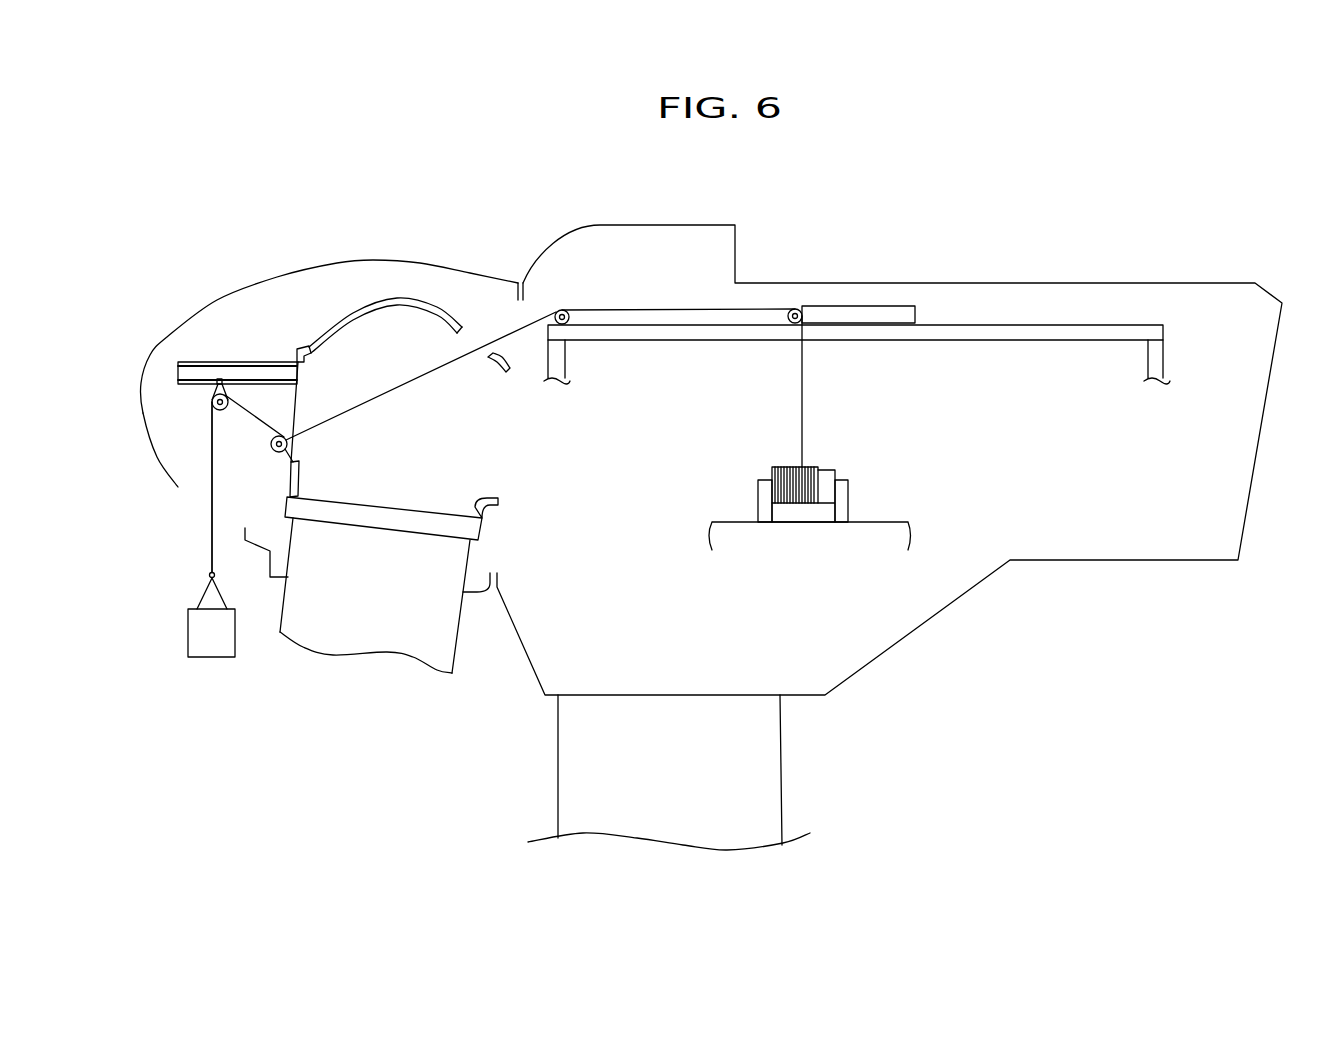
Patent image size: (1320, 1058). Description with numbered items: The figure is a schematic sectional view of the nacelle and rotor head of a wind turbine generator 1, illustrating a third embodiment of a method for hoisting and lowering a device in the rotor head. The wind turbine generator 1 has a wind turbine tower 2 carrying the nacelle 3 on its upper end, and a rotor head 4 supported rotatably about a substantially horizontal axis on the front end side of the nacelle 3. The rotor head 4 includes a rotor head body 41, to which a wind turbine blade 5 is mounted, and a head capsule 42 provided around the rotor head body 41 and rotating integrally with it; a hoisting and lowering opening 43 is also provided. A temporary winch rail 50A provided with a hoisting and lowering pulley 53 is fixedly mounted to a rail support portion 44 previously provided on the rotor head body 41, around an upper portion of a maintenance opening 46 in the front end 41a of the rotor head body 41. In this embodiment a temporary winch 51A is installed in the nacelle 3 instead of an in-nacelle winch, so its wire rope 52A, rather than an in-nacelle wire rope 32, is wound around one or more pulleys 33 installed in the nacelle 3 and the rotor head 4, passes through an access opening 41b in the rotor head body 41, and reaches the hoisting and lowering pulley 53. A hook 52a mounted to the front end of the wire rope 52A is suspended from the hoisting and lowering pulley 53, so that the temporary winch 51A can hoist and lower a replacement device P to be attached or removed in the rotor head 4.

The wind turbine generator 1 is at (990, 200).
The wind turbine tower 2 is at (781, 760).
The nacelle 3 is at (1095, 283).
The rotor head 4 is at (372, 243).
The wind turbine blade 5 is at (457, 650).
The in-nacelle wire rope 32 is at (213, 470).
The pulley 33 is at (280, 435).
The rotor head body 41 is at (410, 297).
The front end 41a is at (290, 480).
The access opening 41b is at (481, 330).
The head capsule 42 is at (222, 300).
The hoisting and lowering opening 43 is at (185, 497).
The rail support portion 44 is at (298, 350).
The maintenance opening 46 is at (300, 385).
The temporary winch rail 50A is at (200, 362).
The temporary winch 51A is at (837, 472).
The wire rope 52A is at (420, 400).
The hook 52a is at (210, 575).
The hoisting and lowering pulley 53 is at (212, 403).
The replacement device P is at (212, 657).